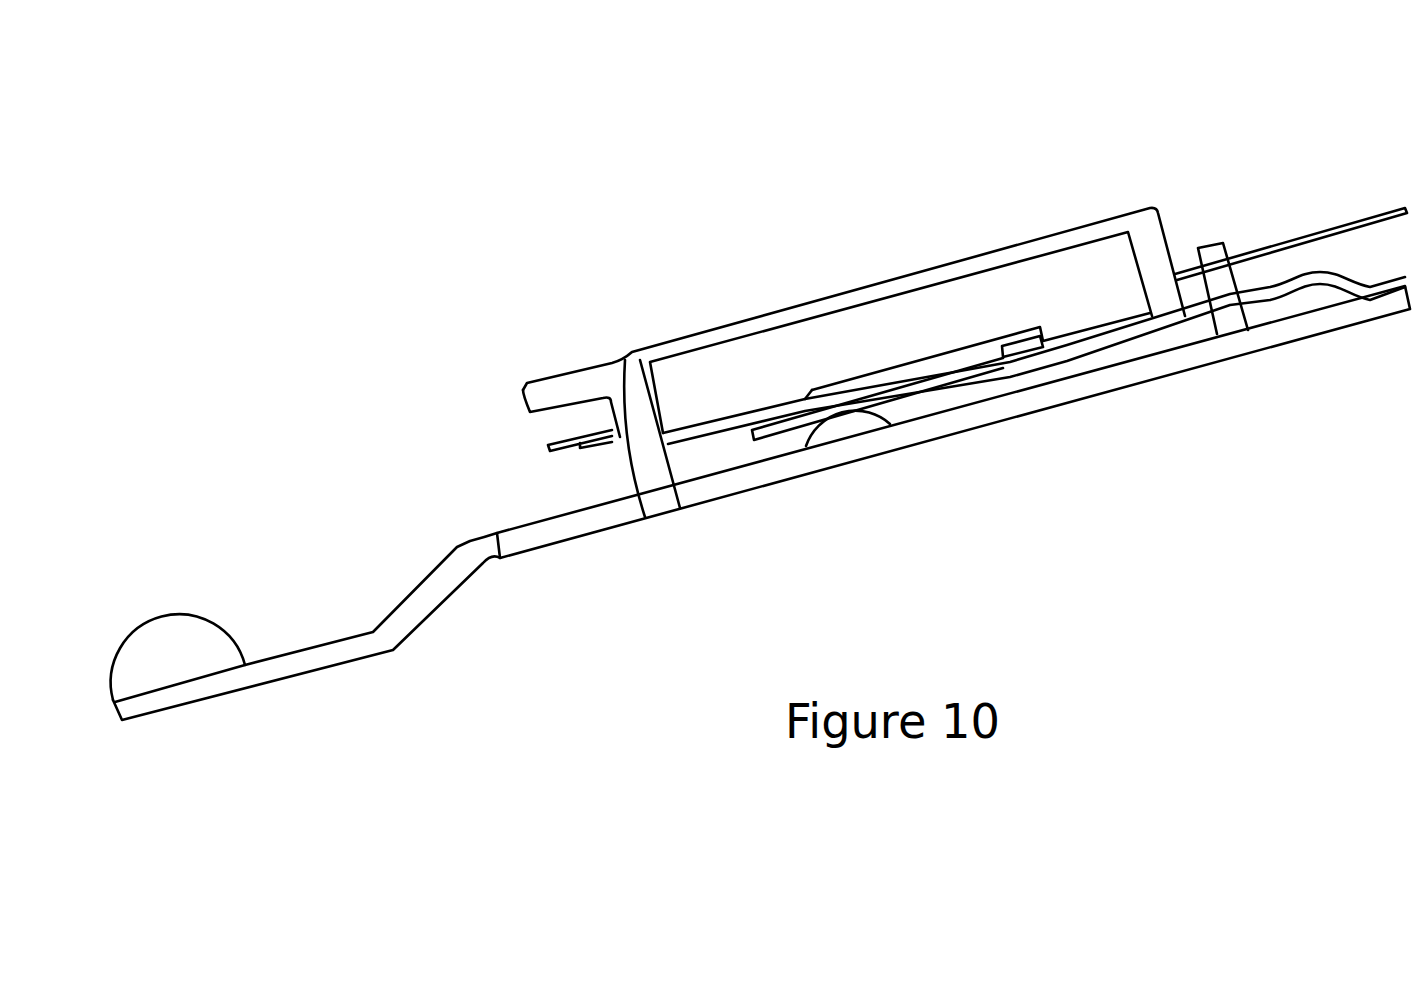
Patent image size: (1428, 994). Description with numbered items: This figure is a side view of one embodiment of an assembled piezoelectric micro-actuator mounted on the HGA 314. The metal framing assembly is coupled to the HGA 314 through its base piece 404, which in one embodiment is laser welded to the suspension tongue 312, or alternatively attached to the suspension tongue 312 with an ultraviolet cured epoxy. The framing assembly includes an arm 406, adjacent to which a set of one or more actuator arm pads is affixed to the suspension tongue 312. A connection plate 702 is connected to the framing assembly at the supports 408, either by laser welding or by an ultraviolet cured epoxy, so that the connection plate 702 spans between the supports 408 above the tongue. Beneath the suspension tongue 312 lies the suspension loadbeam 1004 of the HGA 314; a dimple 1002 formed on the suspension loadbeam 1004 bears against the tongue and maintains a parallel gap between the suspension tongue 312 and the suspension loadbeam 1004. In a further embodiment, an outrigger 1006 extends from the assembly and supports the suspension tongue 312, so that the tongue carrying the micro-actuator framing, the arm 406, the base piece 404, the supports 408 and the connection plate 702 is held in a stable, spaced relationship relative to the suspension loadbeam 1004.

The HGA 314 is at (1103, 371).
The arm 406 is at (825, 345).
The connection plate 702 is at (579, 448).
The base piece 404 is at (721, 420).
The suspension tongue 312 is at (951, 393).
The support 408 is at (1030, 350).
The dimple 1002 is at (847, 423).
The suspension loadbeam 1004 is at (832, 472).
The outrigger 1006 is at (1312, 273).